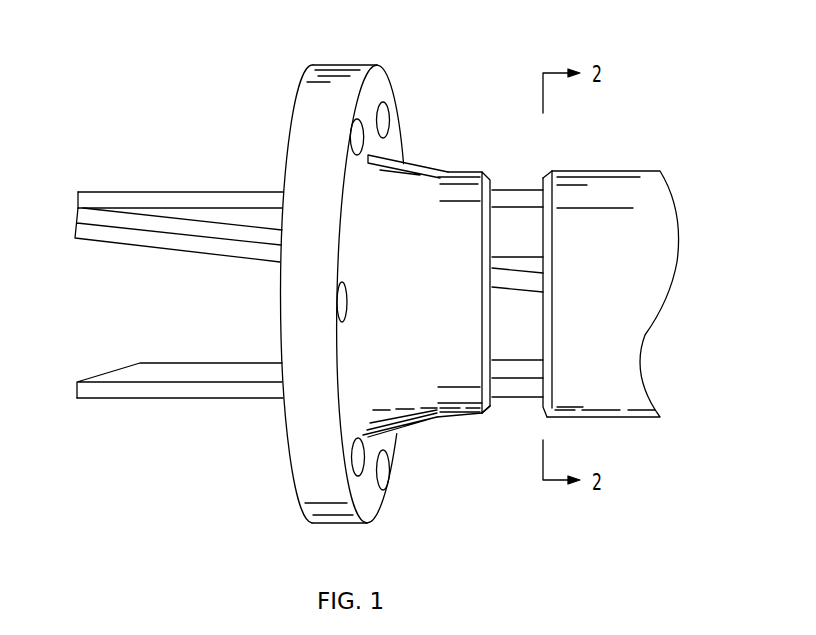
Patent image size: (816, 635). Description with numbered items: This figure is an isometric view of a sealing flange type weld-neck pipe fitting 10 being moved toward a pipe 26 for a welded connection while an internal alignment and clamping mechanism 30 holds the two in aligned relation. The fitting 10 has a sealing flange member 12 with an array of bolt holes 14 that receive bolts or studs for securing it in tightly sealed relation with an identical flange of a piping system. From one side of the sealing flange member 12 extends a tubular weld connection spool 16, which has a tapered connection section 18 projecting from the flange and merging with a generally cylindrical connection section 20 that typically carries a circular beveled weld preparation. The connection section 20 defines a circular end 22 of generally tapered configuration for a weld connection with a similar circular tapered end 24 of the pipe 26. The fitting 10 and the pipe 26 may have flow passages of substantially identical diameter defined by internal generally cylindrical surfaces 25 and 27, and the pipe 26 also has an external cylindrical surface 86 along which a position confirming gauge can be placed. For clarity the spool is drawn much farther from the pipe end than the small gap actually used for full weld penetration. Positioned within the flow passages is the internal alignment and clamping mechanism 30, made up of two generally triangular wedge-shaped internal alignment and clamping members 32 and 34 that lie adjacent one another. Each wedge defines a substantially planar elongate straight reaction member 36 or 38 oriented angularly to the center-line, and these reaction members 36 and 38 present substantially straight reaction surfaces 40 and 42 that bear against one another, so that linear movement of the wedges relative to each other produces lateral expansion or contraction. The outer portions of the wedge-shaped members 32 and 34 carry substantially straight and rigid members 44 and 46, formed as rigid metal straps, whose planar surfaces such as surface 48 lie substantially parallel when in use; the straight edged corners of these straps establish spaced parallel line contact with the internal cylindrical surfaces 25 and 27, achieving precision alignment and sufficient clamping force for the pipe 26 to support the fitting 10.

The weld-neck pipe fitting 10 is at (416, 64).
The sealing flange member 12 is at (331, 78).
The bolt holes 14 is at (360, 458).
The tubular weld connection spool 16 is at (471, 170).
The tapered connection section 18 is at (421, 160).
The cylindrical connection section 20 is at (460, 416).
The circular end 22 is at (488, 410).
The circular tapered end 24 is at (543, 170).
The internal cylindrical surface 25 is at (495, 407).
The pipe 26 is at (653, 247).
The internal cylindrical surface 27 is at (625, 407).
The internal alignment and clamping mechanism 30 is at (106, 178).
The wedge-shaped internal alignment and clamping member 32 is at (172, 190).
The wedge-shaped internal alignment and clamping member 34 is at (147, 398).
The reaction member 36 is at (510, 255).
The reaction member 38 is at (505, 292).
The reaction surface 40 is at (523, 280).
The reaction surface 42 is at (523, 274).
The substantially straight and rigid member 44 is at (234, 197).
The substantially straight and rigid member 46 is at (233, 388).
The substantially straight and planar surface 48 is at (542, 188).
The external cylindrical surface 86 is at (607, 170).